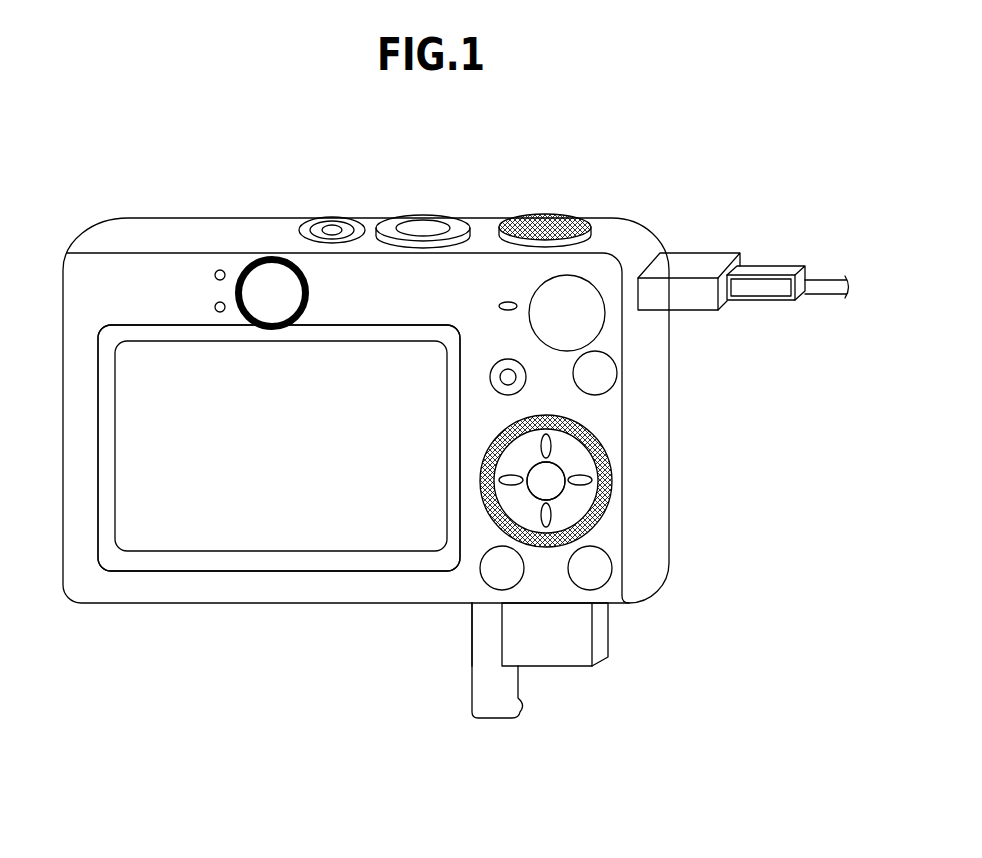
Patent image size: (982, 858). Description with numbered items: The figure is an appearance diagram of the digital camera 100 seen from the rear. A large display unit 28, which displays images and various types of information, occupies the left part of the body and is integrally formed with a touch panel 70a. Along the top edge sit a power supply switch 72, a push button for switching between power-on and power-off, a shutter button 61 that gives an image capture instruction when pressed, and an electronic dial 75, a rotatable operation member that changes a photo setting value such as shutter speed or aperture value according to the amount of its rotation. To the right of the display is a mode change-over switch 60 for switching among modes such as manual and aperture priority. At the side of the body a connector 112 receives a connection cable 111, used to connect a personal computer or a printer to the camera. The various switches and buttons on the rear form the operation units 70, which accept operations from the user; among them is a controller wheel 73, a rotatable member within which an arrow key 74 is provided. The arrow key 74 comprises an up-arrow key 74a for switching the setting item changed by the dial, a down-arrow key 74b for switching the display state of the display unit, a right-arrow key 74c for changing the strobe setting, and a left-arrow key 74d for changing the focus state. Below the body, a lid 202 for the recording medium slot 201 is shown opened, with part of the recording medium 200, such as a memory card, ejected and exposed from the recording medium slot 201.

The digital camera 100 is at (152, 672).
The display unit 28 is at (165, 360).
The touch panel 70a is at (279, 448).
The power supply switch 72 is at (335, 218).
The shutter button 61 is at (423, 228).
The electronic dial 75 is at (548, 218).
The mode change-over switch 60 is at (588, 292).
The connector 112 is at (697, 268).
The connection cable 111 is at (768, 272).
The operation units 70 is at (510, 563).
The controller wheel 73 is at (503, 430).
The arrow key 74 is at (404, 581).
The up-arrow key 74a is at (540, 448).
The down-arrow key 74b is at (494, 580).
The right-arrow key 74c is at (562, 488).
The left-arrow key 74d is at (527, 480).
The recording medium 200 is at (570, 653).
The recording medium slot 201 is at (515, 605).
The lid 202 is at (493, 705).